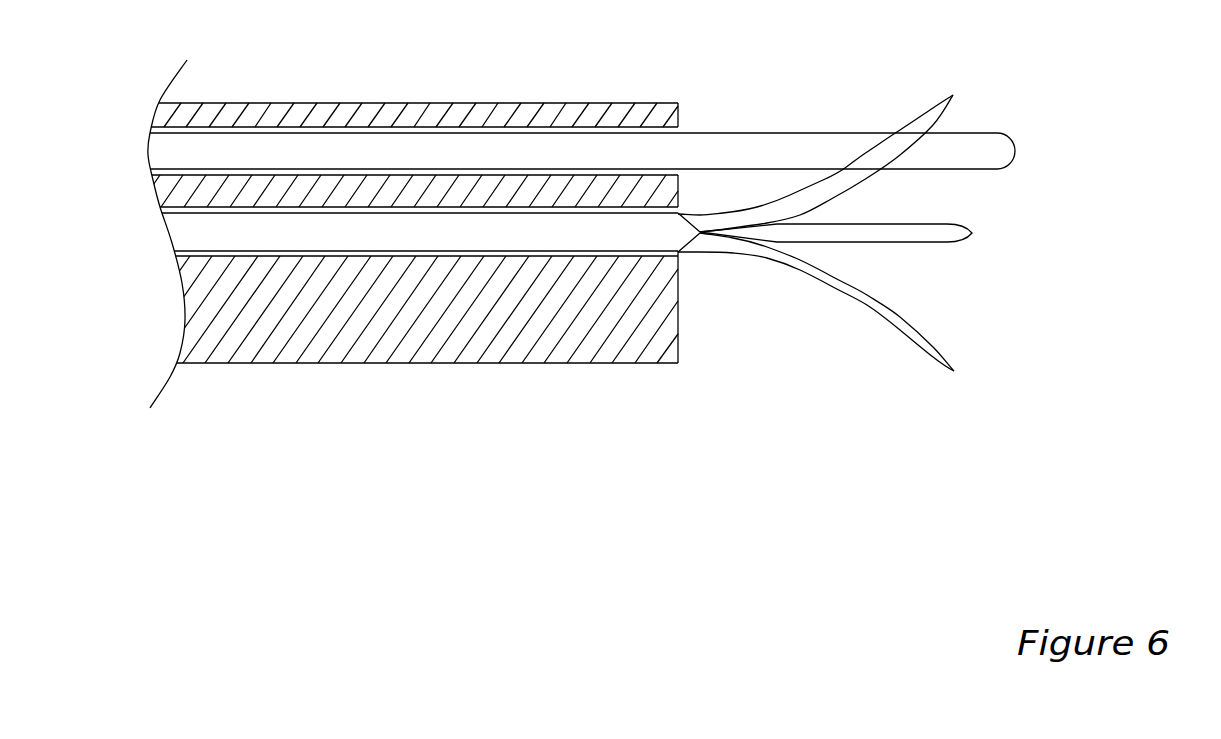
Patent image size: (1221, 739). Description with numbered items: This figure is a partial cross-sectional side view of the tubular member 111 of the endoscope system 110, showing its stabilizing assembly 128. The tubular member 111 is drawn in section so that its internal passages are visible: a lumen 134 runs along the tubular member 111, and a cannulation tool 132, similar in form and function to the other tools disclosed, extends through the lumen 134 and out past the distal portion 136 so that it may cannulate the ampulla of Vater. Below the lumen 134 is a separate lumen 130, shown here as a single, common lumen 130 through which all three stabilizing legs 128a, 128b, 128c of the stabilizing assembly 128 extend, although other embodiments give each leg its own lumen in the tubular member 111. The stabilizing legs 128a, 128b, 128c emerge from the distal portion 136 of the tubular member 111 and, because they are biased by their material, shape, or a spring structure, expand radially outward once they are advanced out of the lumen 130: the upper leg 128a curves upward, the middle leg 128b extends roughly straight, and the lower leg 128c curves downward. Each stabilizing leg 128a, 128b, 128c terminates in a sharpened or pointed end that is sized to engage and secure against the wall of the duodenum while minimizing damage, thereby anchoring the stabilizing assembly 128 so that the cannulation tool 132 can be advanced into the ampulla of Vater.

The endoscope system 110 is at (261, 86).
The tubular member 111 is at (397, 102).
The lumen 134 is at (517, 132).
The distal portion 136 is at (613, 115).
The cannulation tool 132 is at (768, 150).
The lumen 130 is at (497, 256).
The stabilizing assembly 128 is at (703, 276).
The stabilizing leg 128a is at (930, 120).
The stabilizing leg 128b is at (937, 235).
The stabilizing leg 128c is at (923, 337).